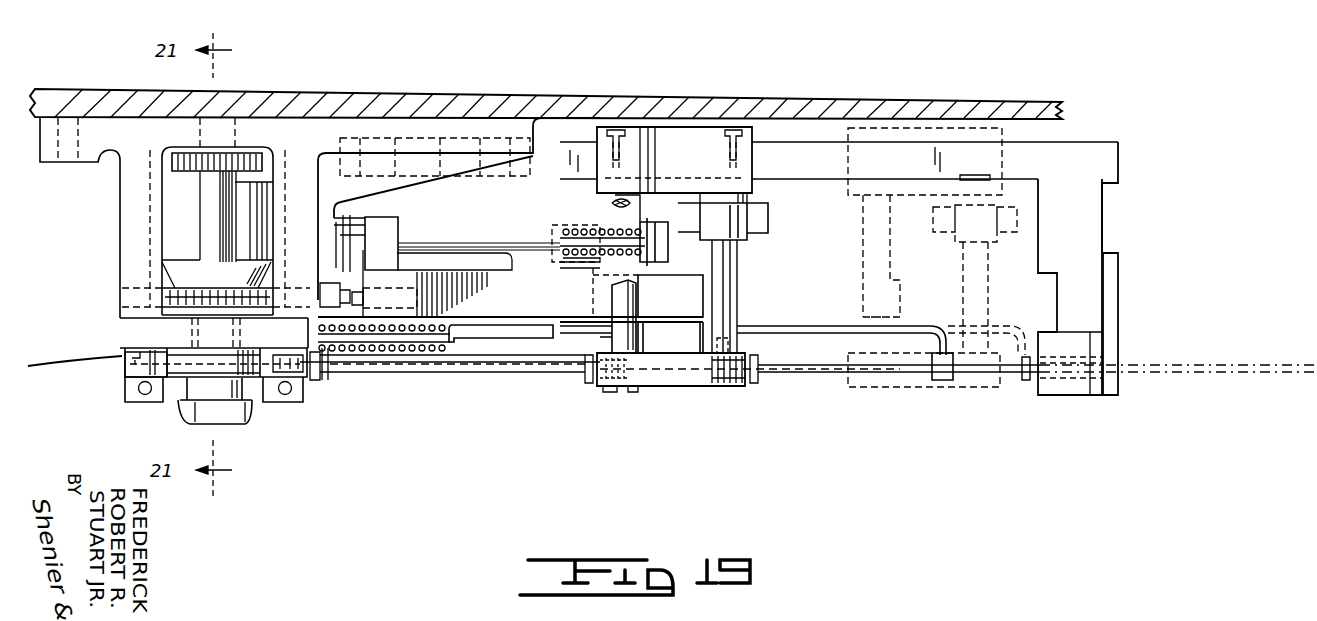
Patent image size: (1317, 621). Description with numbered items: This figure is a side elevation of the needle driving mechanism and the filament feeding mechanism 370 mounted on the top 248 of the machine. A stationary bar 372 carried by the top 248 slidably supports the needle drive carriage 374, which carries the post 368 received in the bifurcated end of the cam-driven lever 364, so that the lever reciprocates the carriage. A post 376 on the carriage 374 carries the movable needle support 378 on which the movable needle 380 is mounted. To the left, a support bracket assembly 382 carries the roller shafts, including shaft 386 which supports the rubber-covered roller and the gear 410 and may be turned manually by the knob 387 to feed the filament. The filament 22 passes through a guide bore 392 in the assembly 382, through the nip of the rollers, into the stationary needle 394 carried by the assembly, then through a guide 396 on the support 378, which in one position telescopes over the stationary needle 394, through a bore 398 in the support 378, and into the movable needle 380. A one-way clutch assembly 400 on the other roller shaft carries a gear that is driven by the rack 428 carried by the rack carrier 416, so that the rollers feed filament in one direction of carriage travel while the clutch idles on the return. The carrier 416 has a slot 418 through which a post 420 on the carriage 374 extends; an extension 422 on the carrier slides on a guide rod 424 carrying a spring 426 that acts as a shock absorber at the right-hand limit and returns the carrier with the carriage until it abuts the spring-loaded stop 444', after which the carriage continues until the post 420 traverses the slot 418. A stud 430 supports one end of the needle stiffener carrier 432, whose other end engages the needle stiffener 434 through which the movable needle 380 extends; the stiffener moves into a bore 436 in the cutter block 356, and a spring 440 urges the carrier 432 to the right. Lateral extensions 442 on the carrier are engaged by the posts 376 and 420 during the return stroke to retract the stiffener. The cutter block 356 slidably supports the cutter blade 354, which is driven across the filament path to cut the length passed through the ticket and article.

The filament 22 is at (78, 354).
The top 248 is at (722, 100).
The cutter blade 354 is at (1103, 397).
The cutter block 356 is at (1060, 403).
The lever 364 is at (770, 228).
The post 368 is at (745, 272).
The filament feeding mechanism 370 is at (705, 425).
The stationary bar 372 is at (846, 132).
The needle drive carriage 374 is at (630, 120).
The post 376 is at (594, 373).
The movable needle support 378 is at (664, 390).
The movable needle 380 is at (839, 373).
The support bracket assembly 382 is at (112, 282).
The shaft 386 is at (205, 215).
The knob 387 is at (230, 420).
The guide bore 392 is at (125, 382).
The stationary needle 394 is at (312, 382).
The guide 396 is at (506, 377).
The bore 398 is at (740, 385).
The one-way clutch assembly 400 is at (268, 178).
The gear 410 is at (243, 164).
The rack carrier 416 is at (509, 273).
The slot 418 is at (693, 290).
The post 420 is at (630, 281).
The extension 422 is at (378, 236).
The guide rod 424 is at (449, 250).
The spring 426 is at (585, 265).
The rack 428 is at (365, 308).
The stud 430 is at (545, 352).
The needle stiffener carrier 432 is at (816, 329).
The needle stiffener 434 is at (1008, 385).
The bore 436 is at (1060, 355).
The spring 440 is at (420, 292).
The lateral extensions 442 is at (641, 342).
The flange 444' is at (324, 404).